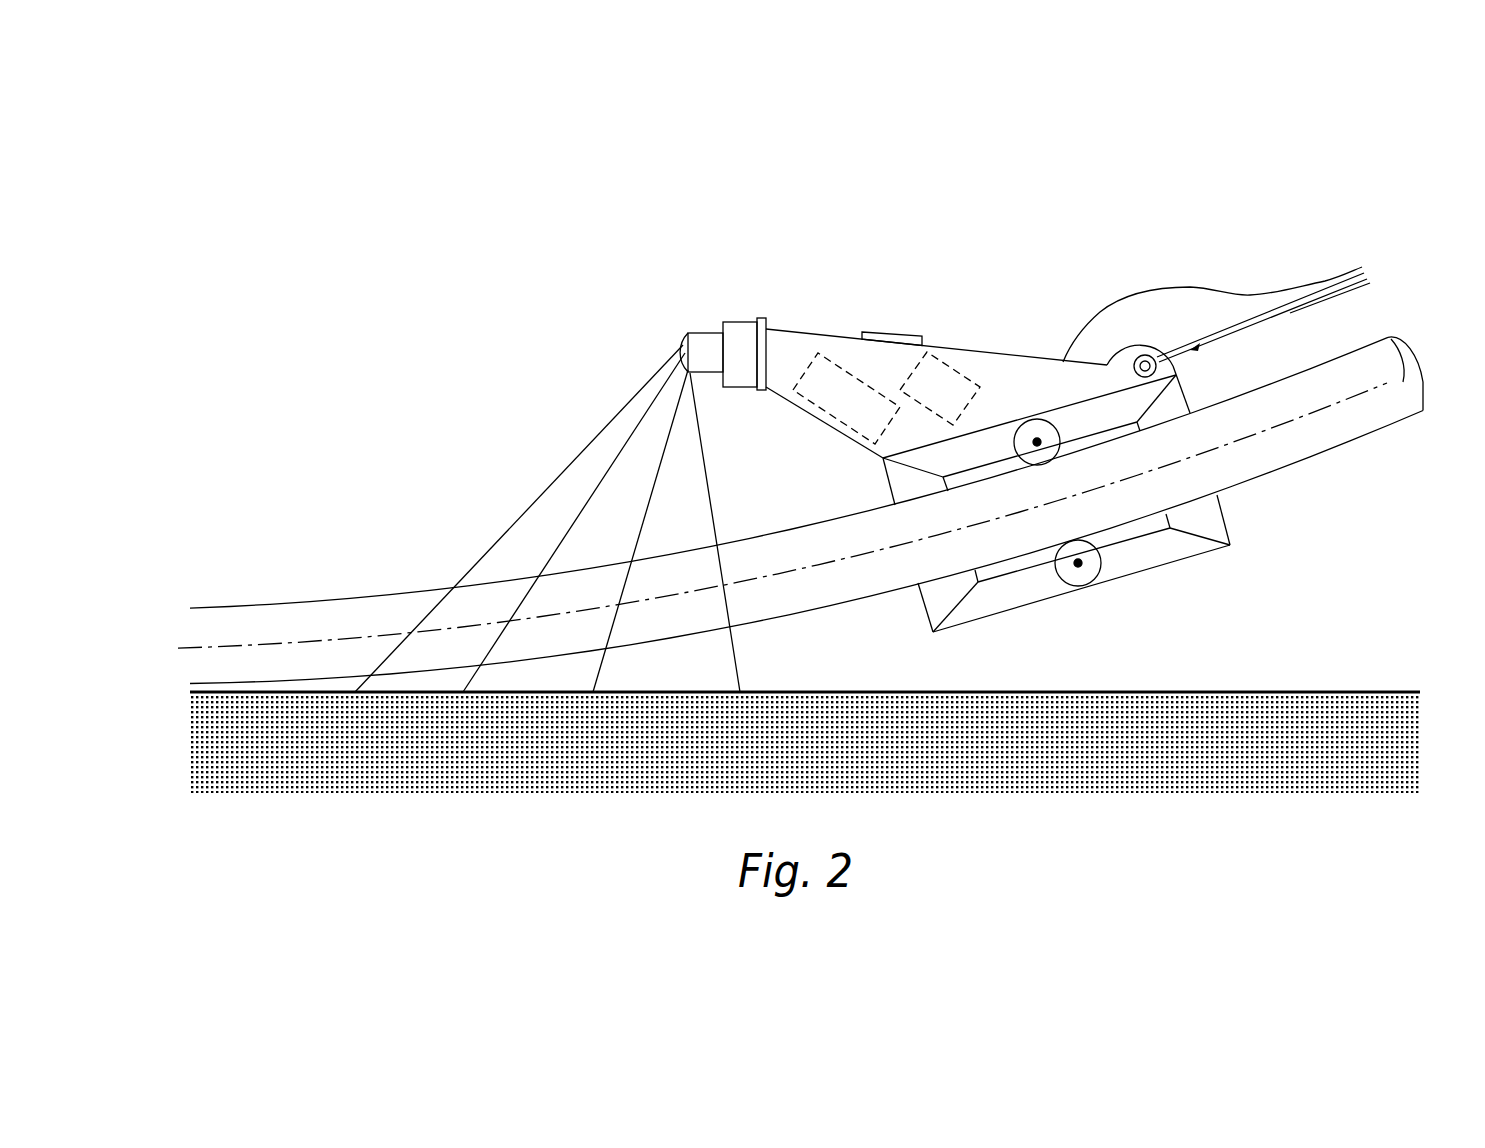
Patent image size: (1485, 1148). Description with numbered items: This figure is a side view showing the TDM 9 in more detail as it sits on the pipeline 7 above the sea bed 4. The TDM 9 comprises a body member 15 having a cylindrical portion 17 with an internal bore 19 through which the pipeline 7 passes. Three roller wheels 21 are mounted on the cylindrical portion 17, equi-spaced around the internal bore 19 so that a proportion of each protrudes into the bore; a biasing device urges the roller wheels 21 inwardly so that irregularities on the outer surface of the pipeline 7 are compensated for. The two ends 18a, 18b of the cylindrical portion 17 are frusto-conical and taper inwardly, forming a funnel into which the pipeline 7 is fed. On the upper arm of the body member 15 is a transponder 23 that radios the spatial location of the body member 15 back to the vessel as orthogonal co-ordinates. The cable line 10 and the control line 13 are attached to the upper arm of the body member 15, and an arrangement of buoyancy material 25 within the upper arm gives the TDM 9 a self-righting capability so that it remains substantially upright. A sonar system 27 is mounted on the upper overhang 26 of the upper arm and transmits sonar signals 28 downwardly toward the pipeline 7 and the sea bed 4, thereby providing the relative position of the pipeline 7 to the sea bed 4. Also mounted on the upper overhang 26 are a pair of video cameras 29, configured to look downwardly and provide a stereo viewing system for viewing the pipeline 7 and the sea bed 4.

The sea bed 4 is at (1188, 683).
The pipeline 7 is at (833, 583).
The TDM 9 is at (1013, 228).
The cable line 10 is at (1308, 308).
The control line 13 is at (1339, 268).
The body member 15 is at (1020, 383).
The cylindrical portion 17 is at (1015, 588).
The end 18a is at (945, 600).
The end 18b is at (1203, 515).
The internal bore 19 is at (1030, 558).
The roller wheels 21 is at (1107, 568).
The transponder 23 is at (932, 333).
The buoyancy material 25 is at (930, 382).
The upper overhang 26 is at (778, 348).
The sonar system 27 is at (635, 320).
The video cameras 29 is at (700, 320).
The sonar signals 28 is at (703, 485).